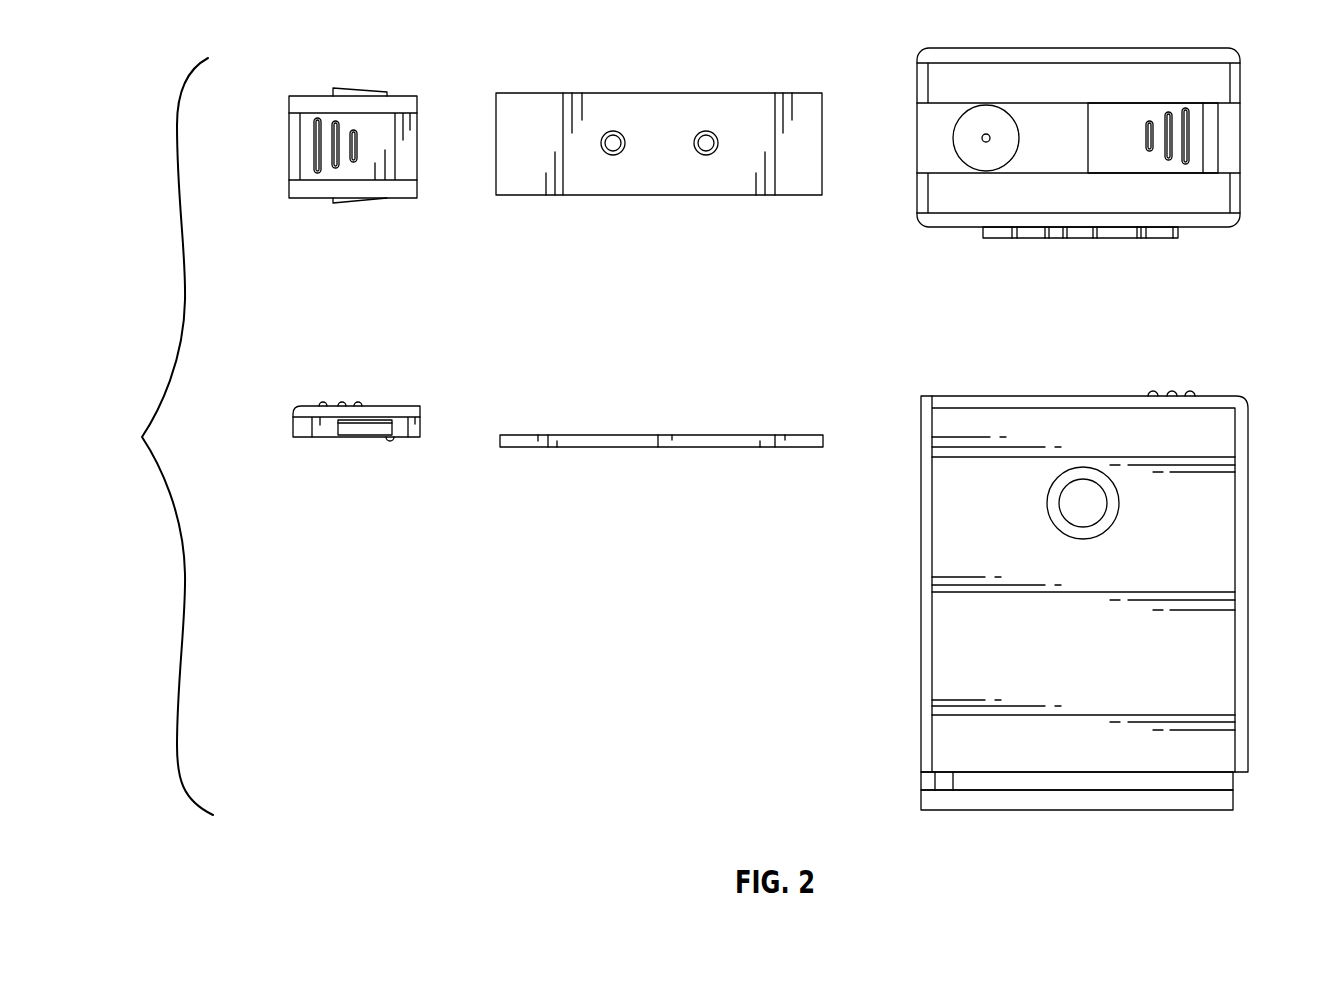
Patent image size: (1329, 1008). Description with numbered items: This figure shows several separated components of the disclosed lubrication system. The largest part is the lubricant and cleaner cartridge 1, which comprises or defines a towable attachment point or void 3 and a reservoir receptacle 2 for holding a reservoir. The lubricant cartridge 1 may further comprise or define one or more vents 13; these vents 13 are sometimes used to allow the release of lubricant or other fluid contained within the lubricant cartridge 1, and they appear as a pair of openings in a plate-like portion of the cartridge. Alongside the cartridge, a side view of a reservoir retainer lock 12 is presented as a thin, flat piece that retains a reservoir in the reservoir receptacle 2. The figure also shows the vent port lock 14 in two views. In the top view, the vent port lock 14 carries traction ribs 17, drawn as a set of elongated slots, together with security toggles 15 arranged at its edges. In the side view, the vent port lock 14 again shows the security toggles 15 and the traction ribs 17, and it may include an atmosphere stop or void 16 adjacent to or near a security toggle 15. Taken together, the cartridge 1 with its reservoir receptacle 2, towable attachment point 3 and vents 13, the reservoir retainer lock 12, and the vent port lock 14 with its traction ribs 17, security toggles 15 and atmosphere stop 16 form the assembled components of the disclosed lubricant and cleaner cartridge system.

The lubricant and cleaner cartridge 1 is at (1247, 421).
The reservoir receptacle 2 is at (953, 138).
The towable attachment point 3 is at (1120, 505).
The reservoir retainer lock 12 is at (652, 448).
The vent or void for aspiration of fluid 13 is at (612, 155).
The vent port lock 14 is at (289, 118).
The security toggles 15 is at (348, 203).
The atmosphere stop or void 16 is at (390, 442).
The traction ribs 17 is at (313, 150).